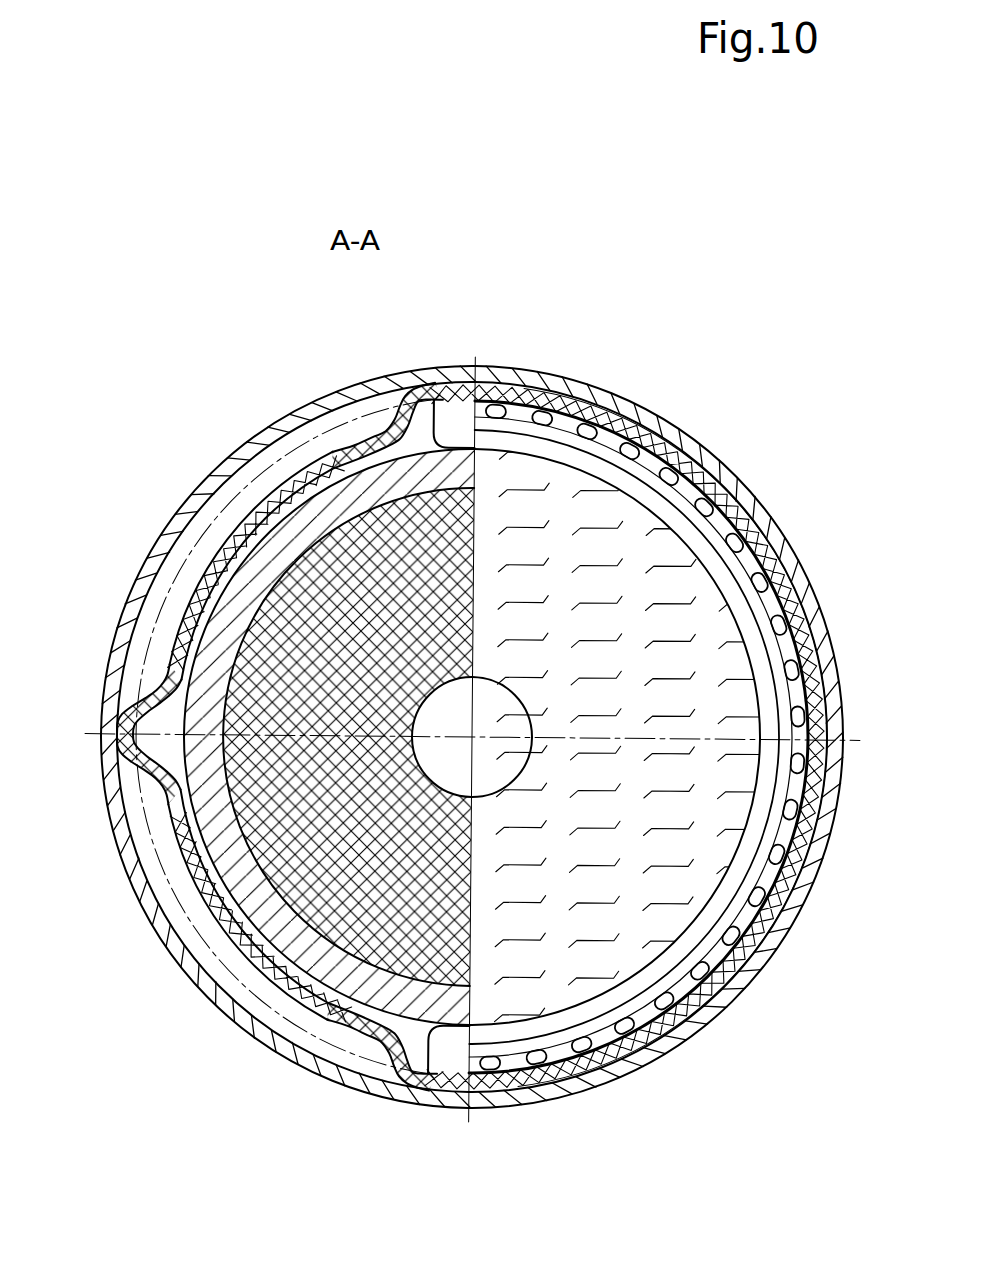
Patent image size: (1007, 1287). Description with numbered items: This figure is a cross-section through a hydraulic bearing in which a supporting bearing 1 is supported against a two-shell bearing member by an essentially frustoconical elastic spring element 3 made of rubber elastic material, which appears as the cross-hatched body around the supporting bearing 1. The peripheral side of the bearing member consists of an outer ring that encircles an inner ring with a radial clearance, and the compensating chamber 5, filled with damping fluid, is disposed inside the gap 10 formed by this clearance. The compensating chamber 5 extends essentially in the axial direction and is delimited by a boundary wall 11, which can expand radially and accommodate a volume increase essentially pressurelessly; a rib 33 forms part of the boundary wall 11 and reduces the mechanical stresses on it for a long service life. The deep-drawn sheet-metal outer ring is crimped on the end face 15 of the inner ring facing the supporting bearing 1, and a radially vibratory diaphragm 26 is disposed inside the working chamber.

The supporting bearing 1 is at (410, 805).
The elastic spring element 3 is at (283, 635).
The compensating chamber 5 is at (197, 900).
The gap 10 is at (213, 533).
The boundary wall 11 is at (180, 822).
The end face 15 is at (320, 512).
The radially vibratory diaphragm 26 is at (802, 620).
The rib 33 is at (118, 712).